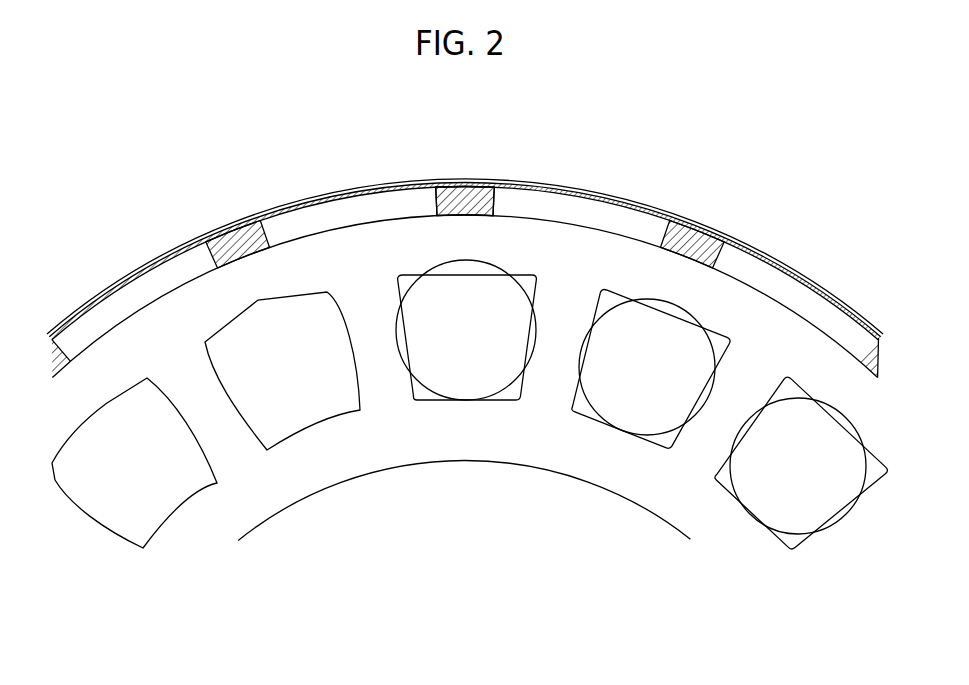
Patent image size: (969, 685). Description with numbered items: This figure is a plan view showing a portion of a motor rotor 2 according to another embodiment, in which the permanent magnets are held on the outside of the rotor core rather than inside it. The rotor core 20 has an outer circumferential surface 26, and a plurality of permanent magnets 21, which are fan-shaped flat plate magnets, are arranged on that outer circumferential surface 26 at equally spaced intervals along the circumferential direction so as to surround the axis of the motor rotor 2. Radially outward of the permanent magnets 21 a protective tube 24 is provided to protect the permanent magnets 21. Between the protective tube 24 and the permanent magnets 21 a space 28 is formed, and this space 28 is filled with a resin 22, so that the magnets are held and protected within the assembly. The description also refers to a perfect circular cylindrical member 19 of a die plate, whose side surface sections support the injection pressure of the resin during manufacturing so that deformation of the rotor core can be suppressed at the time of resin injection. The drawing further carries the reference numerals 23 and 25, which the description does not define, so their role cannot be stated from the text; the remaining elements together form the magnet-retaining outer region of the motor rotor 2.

The motor rotor 2 is at (241, 176).
The perfect circular cylindrical member 19 is at (628, 393).
The rotor core 20 is at (538, 433).
The permanent magnets 21 is at (465, 246).
The resin 22 is at (482, 195).
The stator inner periphery 23 is at (420, 463).
The protective tube 24 is at (573, 186).
The coil end 25 is at (188, 506).
The outer circumferential surface 26 is at (465, 213).
The space 28 is at (233, 244).